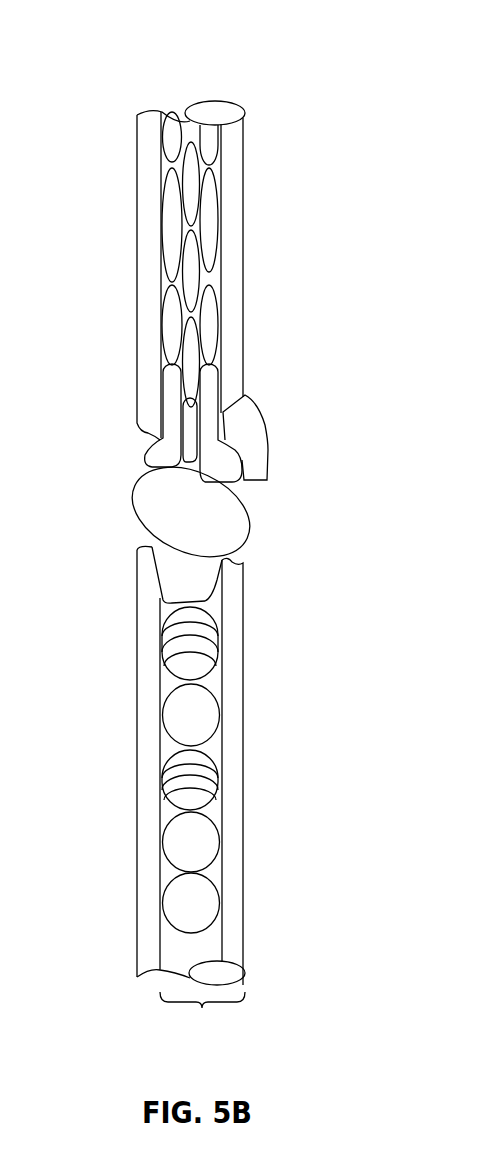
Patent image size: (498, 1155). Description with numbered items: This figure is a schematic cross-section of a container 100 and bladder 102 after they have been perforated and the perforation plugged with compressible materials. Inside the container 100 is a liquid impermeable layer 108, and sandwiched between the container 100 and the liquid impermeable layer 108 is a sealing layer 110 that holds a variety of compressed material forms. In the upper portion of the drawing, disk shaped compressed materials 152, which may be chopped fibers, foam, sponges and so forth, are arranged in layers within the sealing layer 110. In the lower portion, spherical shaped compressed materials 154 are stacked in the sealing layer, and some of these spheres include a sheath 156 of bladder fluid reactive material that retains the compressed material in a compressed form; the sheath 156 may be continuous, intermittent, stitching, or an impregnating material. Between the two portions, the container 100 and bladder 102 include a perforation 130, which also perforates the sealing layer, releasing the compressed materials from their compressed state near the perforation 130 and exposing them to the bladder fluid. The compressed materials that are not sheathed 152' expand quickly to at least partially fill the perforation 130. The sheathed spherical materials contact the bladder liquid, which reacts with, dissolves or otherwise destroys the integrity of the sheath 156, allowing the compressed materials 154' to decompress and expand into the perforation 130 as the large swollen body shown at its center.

The container 100 is at (137, 355).
The bladder 102 is at (202, 1004).
The liquid impermeable layer 108 is at (233, 147).
The sealing layer 110 is at (173, 110).
The perforation 130 is at (134, 474).
The compressed materials 152 is at (235, 303).
The compressed materials that are not sheathed 152' is at (308, 447).
The compressed materials 154 is at (244, 770).
The compressed materials 154' is at (235, 512).
The sheath 156 is at (165, 625).